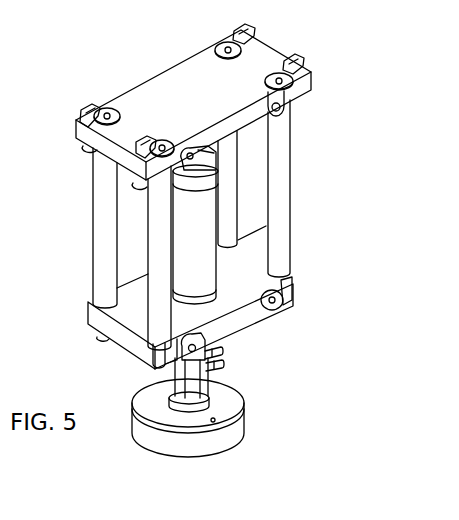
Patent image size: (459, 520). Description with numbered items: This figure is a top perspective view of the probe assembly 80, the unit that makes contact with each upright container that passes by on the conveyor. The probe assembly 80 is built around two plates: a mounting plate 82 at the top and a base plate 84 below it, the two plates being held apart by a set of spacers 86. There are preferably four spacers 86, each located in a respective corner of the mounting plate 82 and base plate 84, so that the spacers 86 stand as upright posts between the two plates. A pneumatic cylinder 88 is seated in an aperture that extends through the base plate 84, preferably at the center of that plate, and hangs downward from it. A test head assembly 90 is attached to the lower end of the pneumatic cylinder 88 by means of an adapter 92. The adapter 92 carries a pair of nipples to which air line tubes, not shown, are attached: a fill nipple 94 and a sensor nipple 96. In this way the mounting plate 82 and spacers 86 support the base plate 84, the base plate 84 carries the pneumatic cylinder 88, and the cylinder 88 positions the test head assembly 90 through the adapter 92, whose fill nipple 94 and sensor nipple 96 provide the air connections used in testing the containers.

The probe assembly 80 is at (458, 2).
The mounting plate 82 is at (176, 88).
The base plate 84 is at (132, 312).
The spacers 86 is at (102, 233).
The pneumatic cylinder 88 is at (207, 267).
The test head assembly 90 is at (238, 427).
The adapter 92 is at (185, 380).
The fill nipple 94 is at (218, 344).
The sensor nipple 96 is at (214, 365).